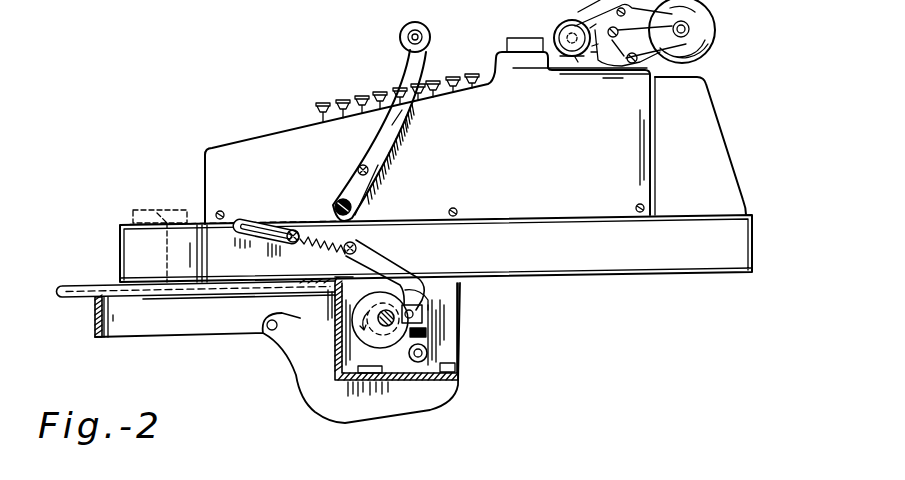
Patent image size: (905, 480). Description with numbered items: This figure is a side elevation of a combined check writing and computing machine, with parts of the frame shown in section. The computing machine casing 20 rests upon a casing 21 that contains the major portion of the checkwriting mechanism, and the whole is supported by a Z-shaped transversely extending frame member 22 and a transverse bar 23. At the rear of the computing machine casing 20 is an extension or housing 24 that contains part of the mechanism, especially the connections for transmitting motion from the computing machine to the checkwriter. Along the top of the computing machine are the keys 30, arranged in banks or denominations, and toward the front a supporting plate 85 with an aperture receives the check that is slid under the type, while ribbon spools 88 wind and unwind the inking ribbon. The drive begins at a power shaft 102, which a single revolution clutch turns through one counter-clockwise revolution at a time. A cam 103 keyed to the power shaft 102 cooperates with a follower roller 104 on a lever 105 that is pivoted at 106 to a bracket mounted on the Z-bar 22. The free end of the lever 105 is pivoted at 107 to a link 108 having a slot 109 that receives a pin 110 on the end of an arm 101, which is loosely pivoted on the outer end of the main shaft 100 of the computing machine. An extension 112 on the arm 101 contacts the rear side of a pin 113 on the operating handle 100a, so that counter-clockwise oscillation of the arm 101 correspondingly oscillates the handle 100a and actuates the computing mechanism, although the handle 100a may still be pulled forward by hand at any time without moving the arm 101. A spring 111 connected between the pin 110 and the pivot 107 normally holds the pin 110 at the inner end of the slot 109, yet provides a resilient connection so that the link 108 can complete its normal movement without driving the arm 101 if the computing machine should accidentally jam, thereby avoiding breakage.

The computing machine casing 20 is at (452, 141).
The casing 21 is at (436, 248).
The Z-shaped frame member 22 is at (407, 381).
The transverse bar 23 is at (96, 322).
The extension or housing 24 is at (700, 146).
The keys 30 is at (380, 94).
The supporting plate 85 is at (110, 286).
The ribbon spools 88 is at (143, 210).
The main shaft 100 is at (360, 199).
The operating handle 100a is at (397, 117).
The arm 101 is at (335, 204).
The power shaft 102 is at (383, 330).
The cam 103 is at (377, 292).
The follower roller 104 is at (418, 302).
The lever 105 is at (425, 292).
The pivot 106 is at (428, 352).
The pivot 107 is at (357, 246).
The link 108 is at (270, 239).
The slot 109 is at (252, 226).
The pin 110 is at (292, 229).
The spring 111 is at (326, 251).
The extension 112 is at (377, 165).
The pin 113 is at (361, 166).